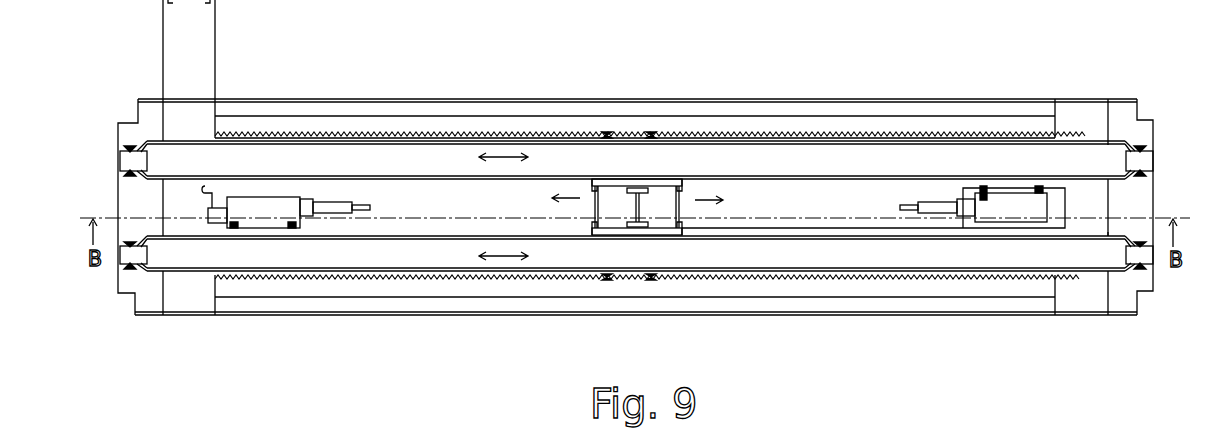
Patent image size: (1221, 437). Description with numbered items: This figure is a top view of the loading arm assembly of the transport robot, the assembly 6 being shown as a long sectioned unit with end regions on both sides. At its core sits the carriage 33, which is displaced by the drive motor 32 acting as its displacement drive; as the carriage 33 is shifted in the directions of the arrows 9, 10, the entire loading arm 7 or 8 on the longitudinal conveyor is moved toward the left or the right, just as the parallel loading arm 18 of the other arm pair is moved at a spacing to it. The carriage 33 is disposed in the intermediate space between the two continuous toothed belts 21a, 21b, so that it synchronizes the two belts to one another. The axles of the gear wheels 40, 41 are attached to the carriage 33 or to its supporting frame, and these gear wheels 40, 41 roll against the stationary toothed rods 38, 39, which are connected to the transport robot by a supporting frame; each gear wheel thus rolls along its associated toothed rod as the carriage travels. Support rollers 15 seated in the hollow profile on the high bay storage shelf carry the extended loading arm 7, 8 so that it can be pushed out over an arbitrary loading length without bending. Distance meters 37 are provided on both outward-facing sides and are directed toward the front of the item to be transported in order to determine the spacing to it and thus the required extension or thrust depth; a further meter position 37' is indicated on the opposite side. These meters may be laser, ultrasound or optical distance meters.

The linear actuator 6 is at (931, 76).
The loading arm 7 is at (123, 147).
The loading arm 8 is at (1115, 247).
The arrow 9 is at (480, 146).
The arrow 10 is at (500, 157).
The support roller 15 is at (128, 146).
The loading arm 18 is at (1120, 157).
The continuous toothed belt 21a is at (817, 167).
The continuous toothed belt 21b is at (877, 255).
The drive motor 32 is at (200, 43).
The carriage 33 is at (665, 203).
The distance meter 37 is at (633, 209).
The guide tube 37' is at (636, 106).
The toothed rod 38 is at (577, 125).
The toothed rod 39 is at (770, 290).
The gear wheel 40 is at (650, 133).
The gear wheel 41 is at (655, 280).